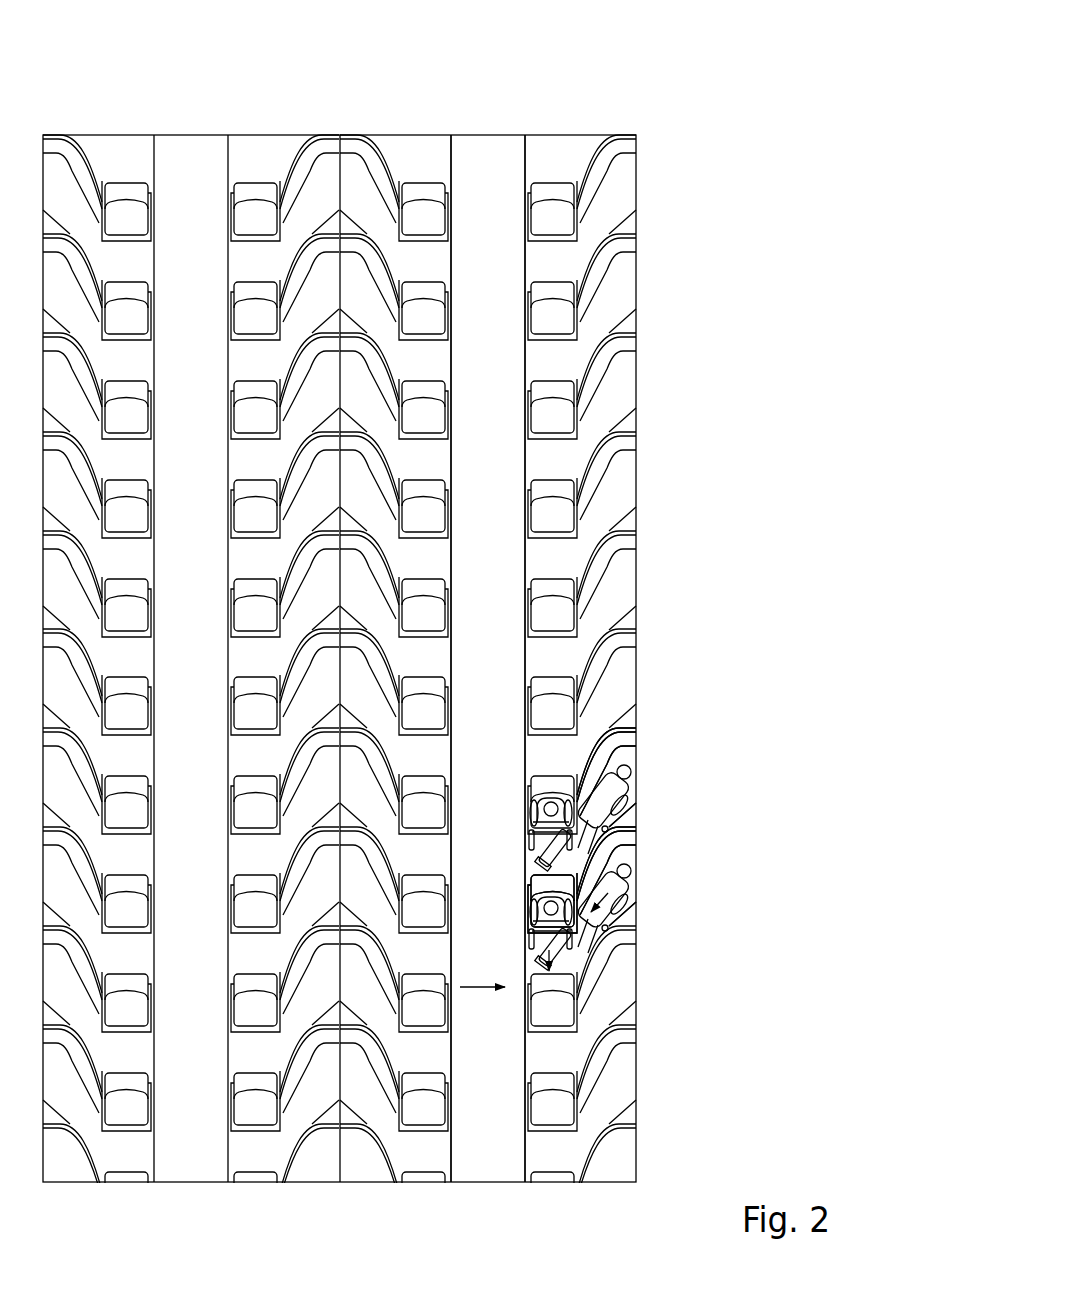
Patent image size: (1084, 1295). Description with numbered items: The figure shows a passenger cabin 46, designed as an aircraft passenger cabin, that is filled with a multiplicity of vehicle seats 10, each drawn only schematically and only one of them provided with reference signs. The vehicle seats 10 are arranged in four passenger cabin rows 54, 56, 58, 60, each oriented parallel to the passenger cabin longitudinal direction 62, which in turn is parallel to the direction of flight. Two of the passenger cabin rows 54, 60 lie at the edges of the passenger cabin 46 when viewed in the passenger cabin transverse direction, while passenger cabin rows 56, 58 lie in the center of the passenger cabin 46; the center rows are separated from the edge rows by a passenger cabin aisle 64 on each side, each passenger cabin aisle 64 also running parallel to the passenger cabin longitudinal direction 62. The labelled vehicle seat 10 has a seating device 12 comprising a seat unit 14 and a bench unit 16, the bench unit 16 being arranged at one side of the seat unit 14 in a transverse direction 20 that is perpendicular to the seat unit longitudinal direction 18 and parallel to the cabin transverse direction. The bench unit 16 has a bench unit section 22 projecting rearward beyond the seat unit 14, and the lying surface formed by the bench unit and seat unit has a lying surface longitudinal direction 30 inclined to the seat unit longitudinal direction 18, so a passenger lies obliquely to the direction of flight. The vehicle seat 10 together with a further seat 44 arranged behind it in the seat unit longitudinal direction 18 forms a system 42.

The vehicle seat 10 is at (724, 871).
The seating device 12 is at (726, 903).
The seat unit 14 is at (518, 907).
The bench unit 16 is at (643, 865).
The seat unit longitudinal direction 18 is at (540, 958).
The transverse direction 20 is at (482, 987).
The bench unit section 22 is at (627, 857).
The lying surface longitudinal direction 30 is at (628, 904).
The system 42 is at (734, 738).
The further seat 44 is at (645, 765).
The passenger cabin 46 is at (729, 81).
The passenger cabin row 54 is at (107, 132).
The passenger cabin row 56 is at (280, 132).
The passenger cabin row 58 is at (416, 132).
The passenger cabin row 60 is at (589, 132).
The passenger cabin longitudinal direction 62 is at (471, 696).
The passenger cabin aisle 64 is at (194, 132).